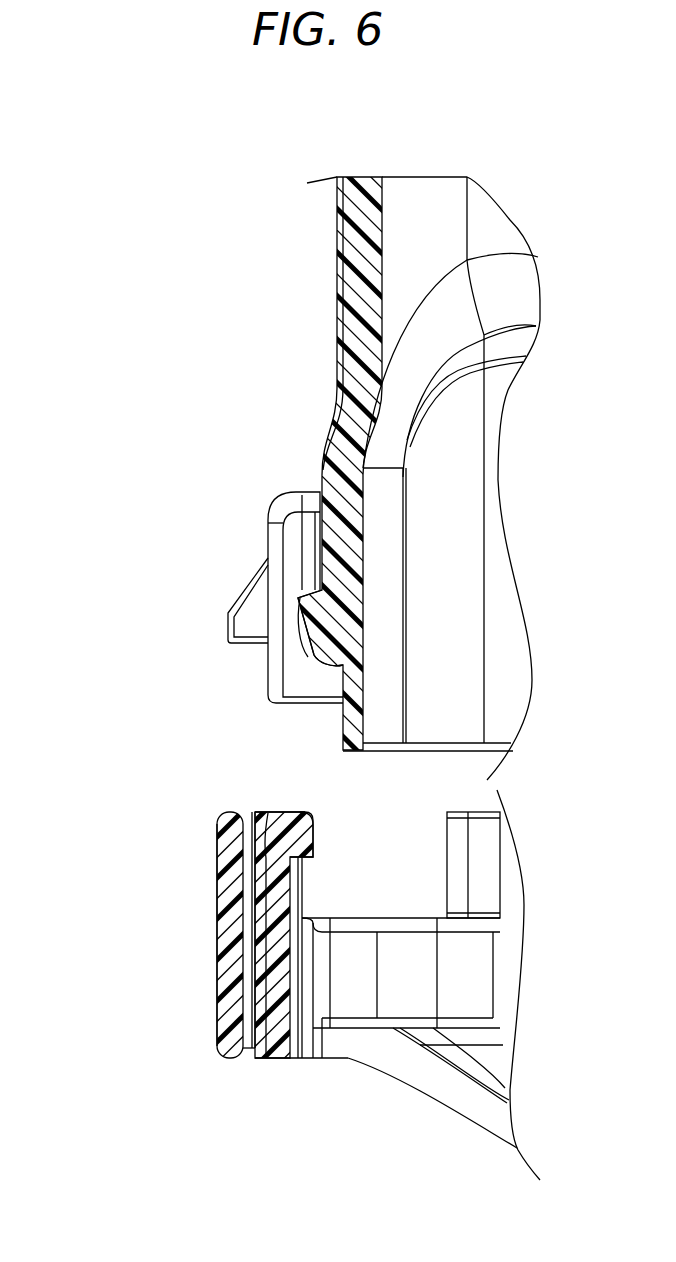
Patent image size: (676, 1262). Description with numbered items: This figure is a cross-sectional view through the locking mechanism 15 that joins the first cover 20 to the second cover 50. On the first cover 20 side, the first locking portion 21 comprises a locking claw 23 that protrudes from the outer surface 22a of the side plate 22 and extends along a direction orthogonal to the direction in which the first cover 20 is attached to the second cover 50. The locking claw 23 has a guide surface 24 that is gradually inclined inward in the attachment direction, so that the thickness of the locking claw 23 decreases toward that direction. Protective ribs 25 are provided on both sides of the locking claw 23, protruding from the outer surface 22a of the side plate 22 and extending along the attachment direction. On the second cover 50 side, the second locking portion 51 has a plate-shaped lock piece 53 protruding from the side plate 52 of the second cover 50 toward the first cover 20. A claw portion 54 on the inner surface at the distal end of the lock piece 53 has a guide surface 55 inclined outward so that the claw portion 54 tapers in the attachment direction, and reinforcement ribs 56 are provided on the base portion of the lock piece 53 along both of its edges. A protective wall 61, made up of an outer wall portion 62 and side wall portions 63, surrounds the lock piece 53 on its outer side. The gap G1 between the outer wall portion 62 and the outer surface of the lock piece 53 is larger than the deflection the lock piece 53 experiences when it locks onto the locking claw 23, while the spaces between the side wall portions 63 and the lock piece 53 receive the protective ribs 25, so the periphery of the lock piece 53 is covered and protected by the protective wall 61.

The locking mechanism 15 is at (100, 677).
The first cover 20 is at (390, 440).
The first locking portion 21 is at (223, 616).
The side plate 22 is at (364, 440).
The outer surface 22a is at (343, 690).
The locking claw 23 is at (312, 592).
The guide surface 24 is at (300, 652).
The protective ribs 25 is at (282, 612).
The second cover 50 is at (321, 947).
The second locking portion 51 is at (247, 934).
The side plate 52 is at (280, 1042).
The lock piece 53 is at (268, 934).
The claw portion 54 is at (313, 843).
The guide surface 55 is at (310, 820).
The reinforcement ribs 56 is at (313, 973).
The protective wall 61 is at (191, 937).
The outer wall portion 62 is at (224, 852).
The side wall portions 63 is at (265, 813).
The gap G1 is at (250, 890).